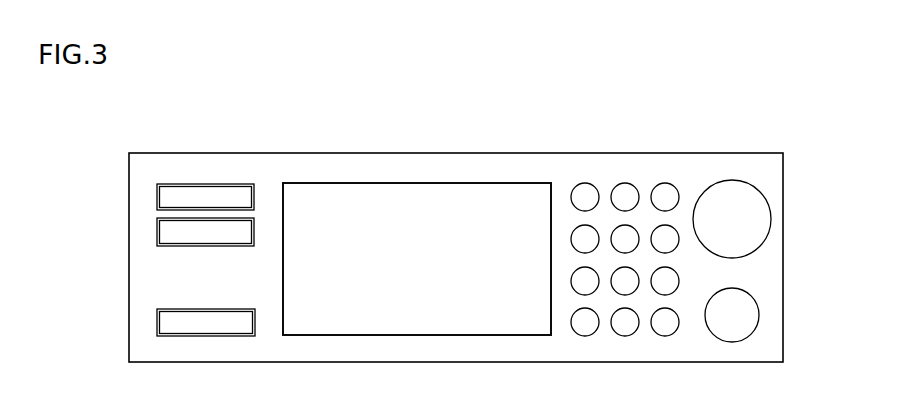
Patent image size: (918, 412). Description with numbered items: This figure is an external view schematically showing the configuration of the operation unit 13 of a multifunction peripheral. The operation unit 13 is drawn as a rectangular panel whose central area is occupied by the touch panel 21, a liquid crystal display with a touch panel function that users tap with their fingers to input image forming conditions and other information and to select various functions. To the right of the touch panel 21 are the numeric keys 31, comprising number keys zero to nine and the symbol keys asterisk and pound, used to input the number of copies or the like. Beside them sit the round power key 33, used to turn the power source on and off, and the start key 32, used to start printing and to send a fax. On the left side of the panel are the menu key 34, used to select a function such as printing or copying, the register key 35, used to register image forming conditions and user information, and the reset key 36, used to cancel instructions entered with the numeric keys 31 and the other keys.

The operation unit 13 is at (741, 153).
The touch panel 21 is at (512, 183).
The numeric keys 31 is at (665, 172).
The start key 32 is at (759, 312).
The power key 33 is at (771, 220).
The menu key 34 is at (157, 197).
The register key 35 is at (157, 234).
The reset key 36 is at (157, 323).